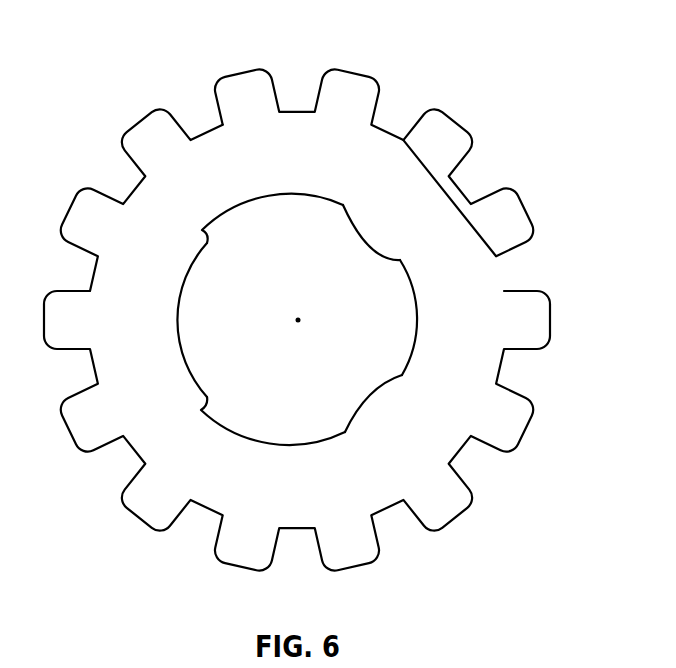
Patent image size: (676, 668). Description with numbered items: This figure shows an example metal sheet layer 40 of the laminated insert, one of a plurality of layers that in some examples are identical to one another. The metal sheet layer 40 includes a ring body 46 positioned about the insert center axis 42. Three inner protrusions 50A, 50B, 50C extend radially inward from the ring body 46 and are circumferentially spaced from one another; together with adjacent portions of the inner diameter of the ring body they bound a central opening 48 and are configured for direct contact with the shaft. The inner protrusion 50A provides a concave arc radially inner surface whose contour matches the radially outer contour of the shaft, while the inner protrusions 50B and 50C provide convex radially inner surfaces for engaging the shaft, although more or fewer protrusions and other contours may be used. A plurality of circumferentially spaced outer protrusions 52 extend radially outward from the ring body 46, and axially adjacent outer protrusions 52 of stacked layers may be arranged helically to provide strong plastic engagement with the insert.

The metal sheet layer 40 is at (311, 287).
The insert center axis 42 is at (298, 320).
The ring body 46 is at (395, 175).
The central opening 48 is at (297, 319).
The inner protrusion 50A is at (180, 320).
The inner protrusion 50B is at (371, 248).
The inner protrusion 50C is at (368, 395).
The outer protrusions 52 is at (347, 72).